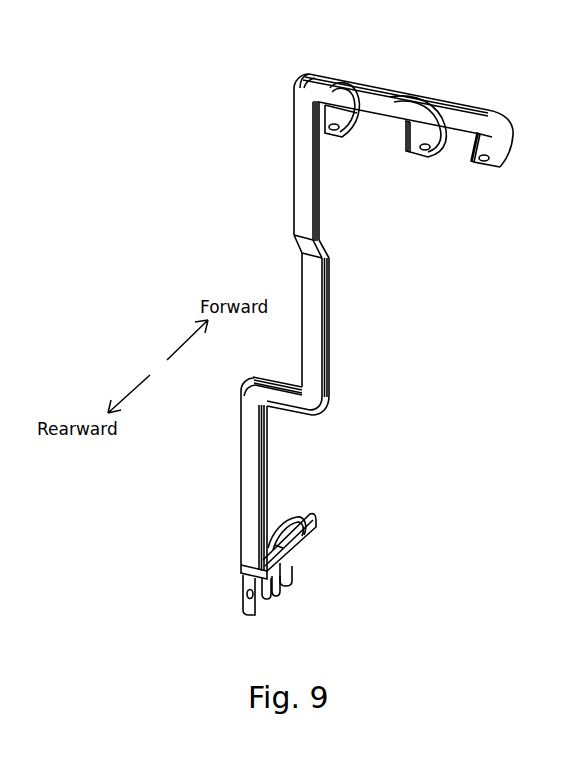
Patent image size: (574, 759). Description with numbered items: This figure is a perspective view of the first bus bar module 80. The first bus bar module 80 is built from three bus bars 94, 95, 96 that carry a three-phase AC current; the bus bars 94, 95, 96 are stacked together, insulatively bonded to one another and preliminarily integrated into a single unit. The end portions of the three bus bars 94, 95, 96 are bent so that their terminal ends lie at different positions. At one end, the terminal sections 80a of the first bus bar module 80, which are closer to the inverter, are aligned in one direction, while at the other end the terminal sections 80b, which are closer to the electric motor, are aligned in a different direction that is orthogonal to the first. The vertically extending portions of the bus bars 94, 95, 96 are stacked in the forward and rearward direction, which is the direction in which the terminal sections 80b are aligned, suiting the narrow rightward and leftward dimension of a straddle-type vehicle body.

The first bus bar module 80 is at (287, 235).
The terminal sections 80a is at (343, 138).
The terminal sections 80b is at (248, 608).
The bus bar 94 is at (334, 92).
The bus bar 95 is at (398, 105).
The bus bar 96 is at (472, 118).